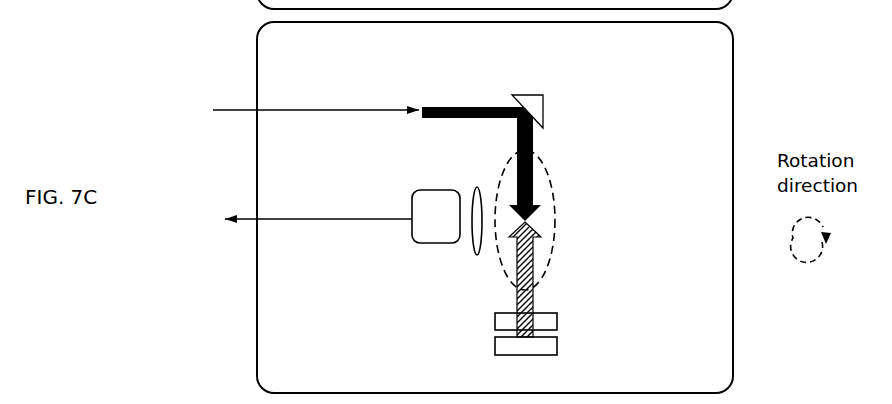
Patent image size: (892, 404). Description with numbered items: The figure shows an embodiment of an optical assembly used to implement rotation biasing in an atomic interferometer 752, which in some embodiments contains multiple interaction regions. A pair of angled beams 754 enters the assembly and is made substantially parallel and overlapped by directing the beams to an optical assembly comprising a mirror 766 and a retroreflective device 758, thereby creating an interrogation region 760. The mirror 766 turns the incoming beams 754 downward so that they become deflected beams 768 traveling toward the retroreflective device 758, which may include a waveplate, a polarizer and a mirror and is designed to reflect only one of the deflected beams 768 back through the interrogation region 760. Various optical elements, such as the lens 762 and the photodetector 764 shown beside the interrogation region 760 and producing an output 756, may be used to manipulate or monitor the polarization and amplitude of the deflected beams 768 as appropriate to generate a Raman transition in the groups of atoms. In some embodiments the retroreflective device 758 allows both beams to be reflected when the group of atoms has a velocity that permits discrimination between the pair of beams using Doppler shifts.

The interferometer 752 is at (252, 31).
The angled beams 754 is at (349, 159).
The output signal 756 is at (287, 219).
The retroreflective device 758 is at (478, 331).
The interrogation region 760 is at (559, 220).
The lens 762 is at (476, 183).
The photodetector 764 is at (434, 250).
The mirror 766 is at (542, 110).
The deflected beams 768 is at (530, 302).